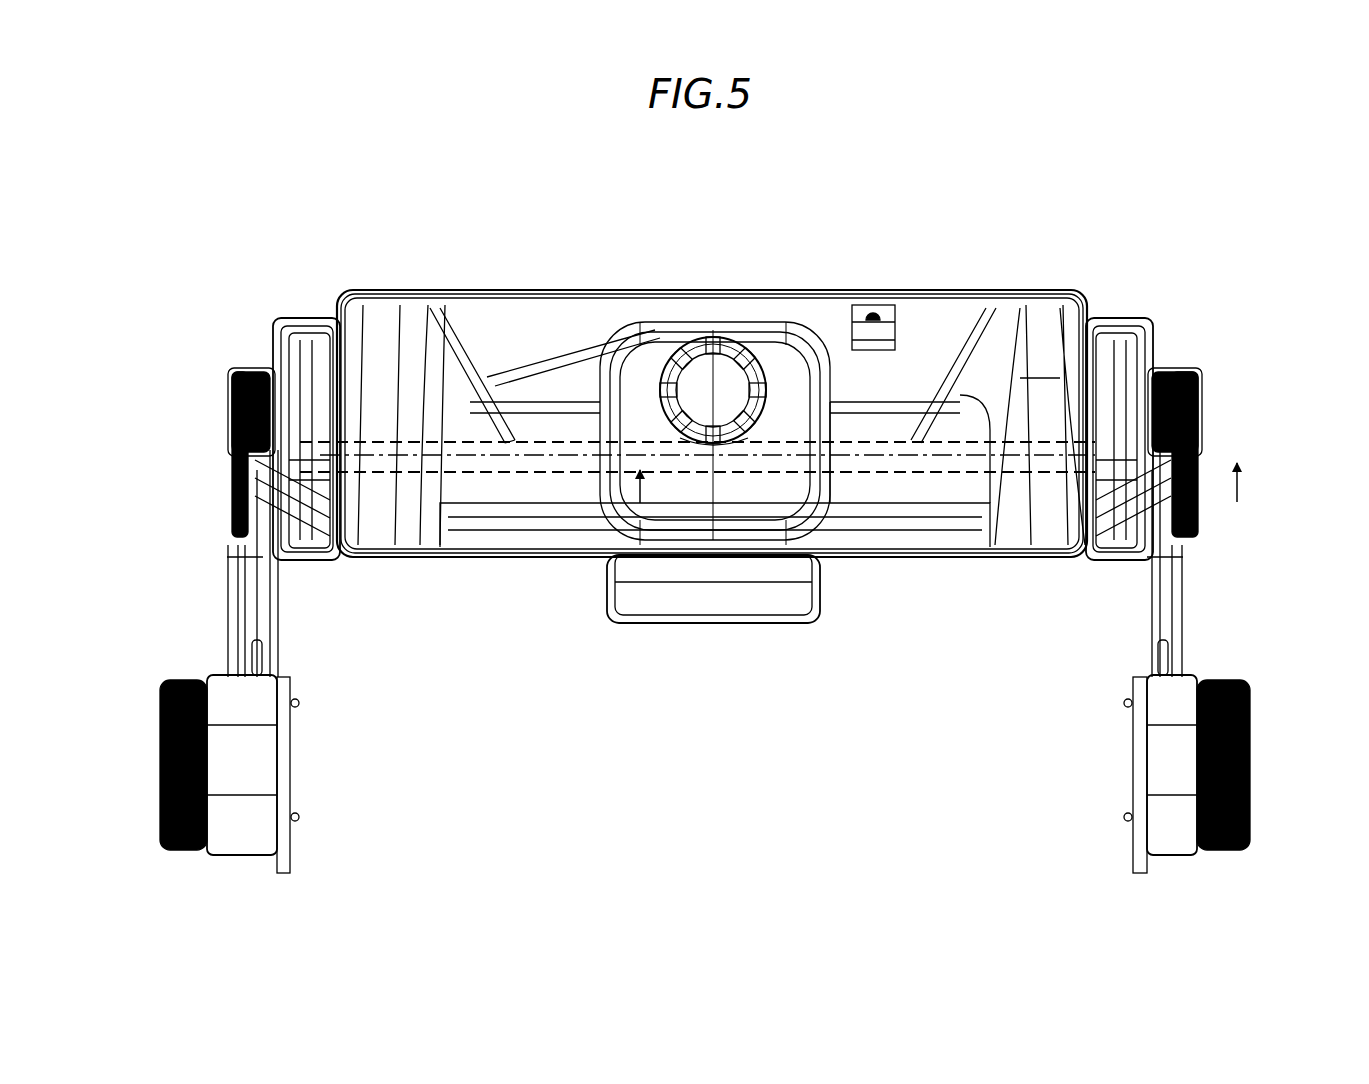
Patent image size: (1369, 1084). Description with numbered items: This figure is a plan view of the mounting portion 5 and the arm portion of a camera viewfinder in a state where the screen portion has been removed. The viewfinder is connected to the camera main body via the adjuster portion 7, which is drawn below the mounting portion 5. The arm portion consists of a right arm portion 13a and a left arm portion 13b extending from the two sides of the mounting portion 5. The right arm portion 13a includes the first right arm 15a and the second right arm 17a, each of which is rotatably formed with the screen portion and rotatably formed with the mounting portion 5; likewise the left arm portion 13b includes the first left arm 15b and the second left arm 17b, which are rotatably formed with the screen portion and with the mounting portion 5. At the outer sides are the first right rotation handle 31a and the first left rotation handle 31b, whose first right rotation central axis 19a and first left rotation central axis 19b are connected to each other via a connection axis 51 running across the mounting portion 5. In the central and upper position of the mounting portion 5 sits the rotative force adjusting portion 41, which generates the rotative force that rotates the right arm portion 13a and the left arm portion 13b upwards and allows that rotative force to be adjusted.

The mounting portion 5 is at (598, 325).
The adjuster portion 7 is at (770, 600).
The right arm portion 13a is at (1300, 540).
The left arm portion 13b is at (115, 540).
The first right arm 15a is at (1190, 604).
The first left arm 15b is at (228, 606).
The second right arm 17a is at (1165, 553).
The second left arm 17b is at (262, 560).
The first right rotation central axis 19a is at (1208, 446).
The first left rotation central axis 19b is at (214, 464).
The first right rotation handle 31a is at (1172, 372).
The first left rotation handle 31b is at (242, 372).
The rotative force adjusting portion 41 is at (722, 385).
The connection axis 51 is at (910, 440).